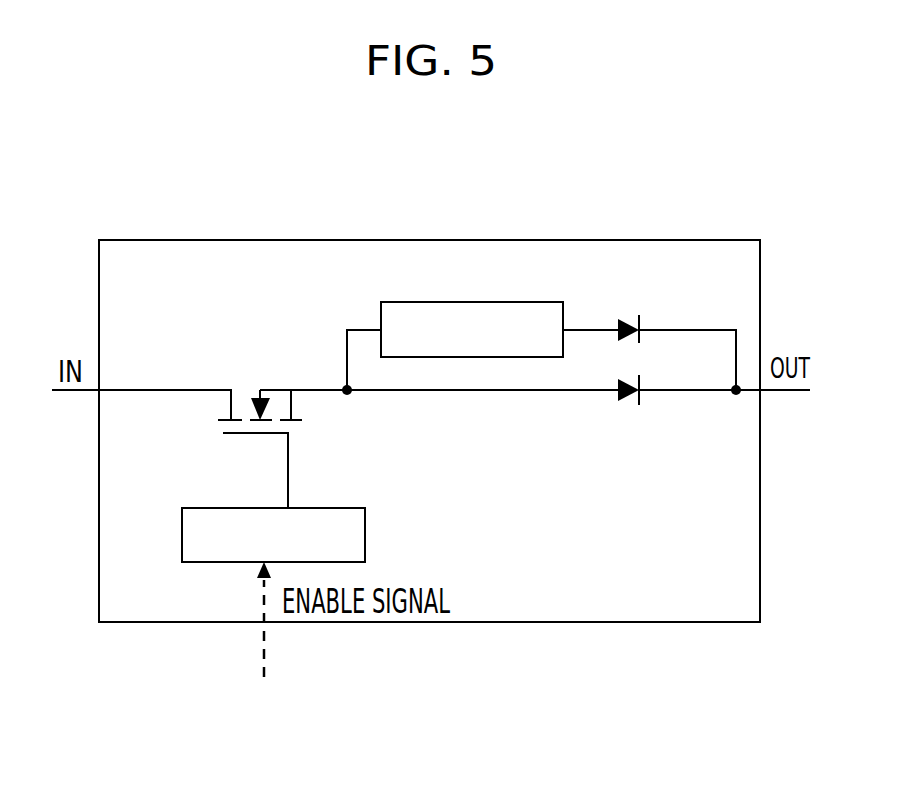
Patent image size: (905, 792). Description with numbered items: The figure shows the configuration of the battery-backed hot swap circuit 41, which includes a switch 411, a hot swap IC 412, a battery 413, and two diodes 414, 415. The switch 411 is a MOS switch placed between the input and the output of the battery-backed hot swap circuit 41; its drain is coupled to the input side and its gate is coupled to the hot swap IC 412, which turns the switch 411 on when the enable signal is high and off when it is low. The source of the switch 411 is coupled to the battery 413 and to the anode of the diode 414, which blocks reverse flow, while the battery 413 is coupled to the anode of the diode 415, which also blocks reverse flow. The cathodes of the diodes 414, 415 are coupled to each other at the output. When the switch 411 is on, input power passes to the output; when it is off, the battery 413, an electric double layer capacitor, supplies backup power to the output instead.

The battery-backed hot swap circuit 41 is at (431, 240).
The switch 411 is at (240, 380).
The hot swap integrated circuit (IC) 412 is at (240, 508).
The battery 413 is at (470, 302).
The diode 414 is at (619, 311).
The diode 415 is at (620, 414).